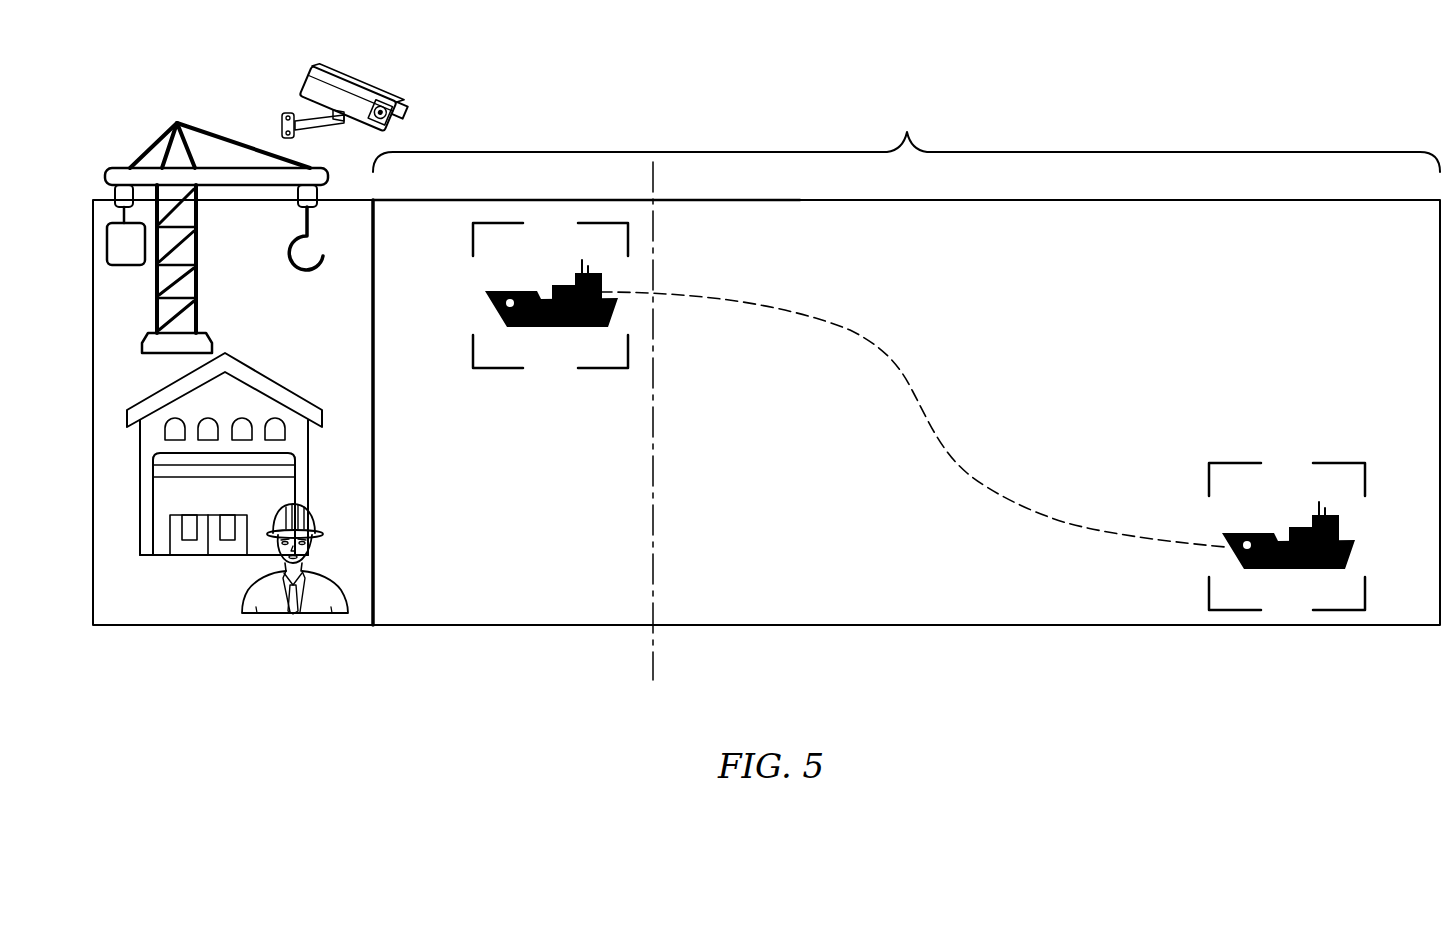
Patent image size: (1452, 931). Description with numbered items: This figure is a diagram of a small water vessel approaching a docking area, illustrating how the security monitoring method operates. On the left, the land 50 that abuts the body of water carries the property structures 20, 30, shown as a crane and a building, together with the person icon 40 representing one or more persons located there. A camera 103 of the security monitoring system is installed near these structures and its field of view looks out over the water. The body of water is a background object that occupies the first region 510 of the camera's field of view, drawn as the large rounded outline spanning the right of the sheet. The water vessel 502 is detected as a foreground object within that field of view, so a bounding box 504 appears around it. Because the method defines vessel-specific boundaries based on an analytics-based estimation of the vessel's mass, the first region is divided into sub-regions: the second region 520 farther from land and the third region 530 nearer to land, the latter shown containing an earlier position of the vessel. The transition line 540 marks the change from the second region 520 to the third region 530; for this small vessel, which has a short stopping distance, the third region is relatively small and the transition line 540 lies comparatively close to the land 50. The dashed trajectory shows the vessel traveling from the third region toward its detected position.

The property structure 20 is at (122, 176).
The camera 103 is at (367, 75).
The first region 510 is at (906, 368).
The transition line 540 is at (653, 243).
The third region 530 is at (575, 423).
The second region 520 is at (1118, 357).
The property structure 30 is at (308, 463).
The person icon 40 is at (333, 580).
The land 50 is at (187, 605).
The water vessel 502 is at (1295, 566).
The bounding box 504 is at (1338, 610).